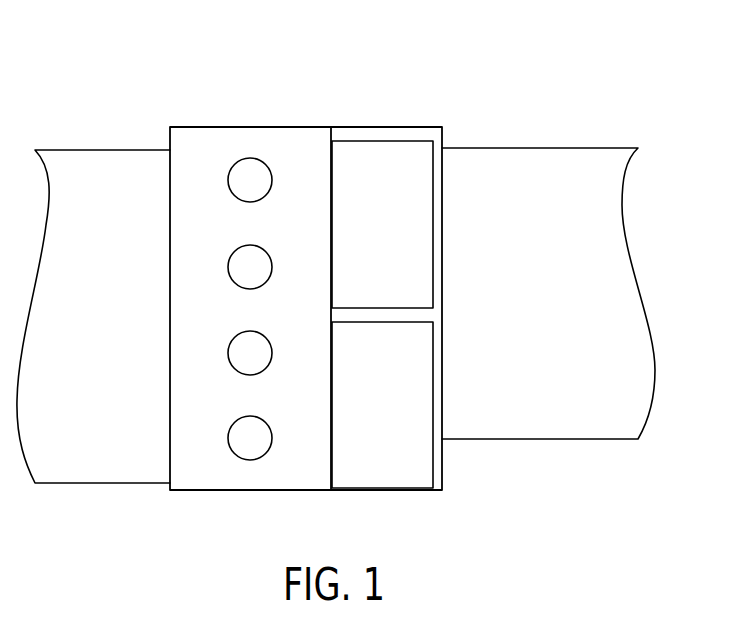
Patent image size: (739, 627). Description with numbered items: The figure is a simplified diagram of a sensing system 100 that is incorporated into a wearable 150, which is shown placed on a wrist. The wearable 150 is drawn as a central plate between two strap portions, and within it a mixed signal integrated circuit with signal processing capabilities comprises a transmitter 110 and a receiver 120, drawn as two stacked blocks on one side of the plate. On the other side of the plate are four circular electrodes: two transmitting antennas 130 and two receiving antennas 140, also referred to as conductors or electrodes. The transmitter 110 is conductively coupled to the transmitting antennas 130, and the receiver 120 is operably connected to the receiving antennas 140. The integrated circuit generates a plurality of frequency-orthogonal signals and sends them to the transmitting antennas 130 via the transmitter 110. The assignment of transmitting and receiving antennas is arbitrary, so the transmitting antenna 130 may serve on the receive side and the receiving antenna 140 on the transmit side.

The sensing system 100 is at (345, 293).
The transmitter 110 is at (398, 240).
The receiver 120 is at (398, 417).
The transmitting antenna 130 is at (240, 177).
The receiving antenna 140 is at (240, 265).
The wearable 150 is at (263, 482).